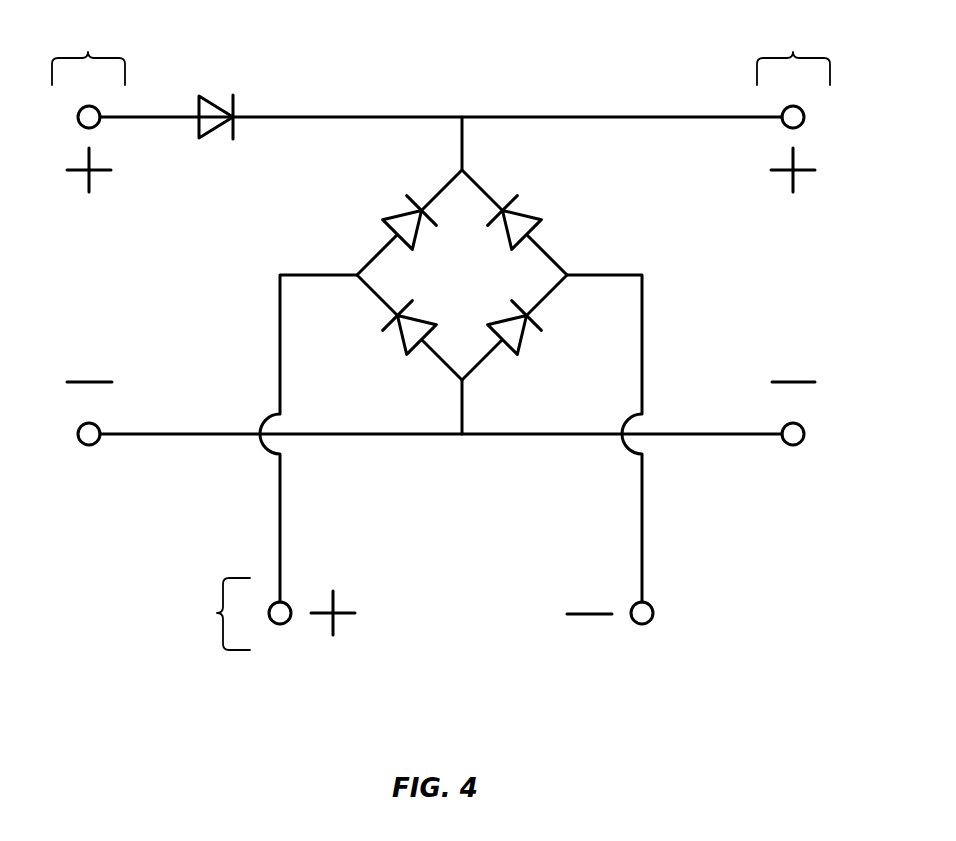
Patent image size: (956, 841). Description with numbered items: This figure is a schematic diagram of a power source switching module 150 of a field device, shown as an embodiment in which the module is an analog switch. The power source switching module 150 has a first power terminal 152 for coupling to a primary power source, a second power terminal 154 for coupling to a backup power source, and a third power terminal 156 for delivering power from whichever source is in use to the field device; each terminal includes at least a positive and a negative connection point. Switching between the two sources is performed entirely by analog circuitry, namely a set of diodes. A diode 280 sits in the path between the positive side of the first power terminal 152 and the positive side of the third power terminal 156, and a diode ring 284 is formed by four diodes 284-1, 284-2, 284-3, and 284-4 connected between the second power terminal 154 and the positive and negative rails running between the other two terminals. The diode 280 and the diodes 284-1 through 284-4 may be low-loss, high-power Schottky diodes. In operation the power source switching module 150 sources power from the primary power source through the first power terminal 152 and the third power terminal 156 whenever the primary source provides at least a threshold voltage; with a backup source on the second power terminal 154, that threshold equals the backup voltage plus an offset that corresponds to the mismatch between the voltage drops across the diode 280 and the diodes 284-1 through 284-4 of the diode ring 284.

The power source switching module 150 is at (519, 32).
The first power terminal 152 is at (88, 55).
The second power terminal 154 is at (217, 613).
The third power terminal 156 is at (793, 55).
The diode 280 is at (214, 100).
The diode ring 284 is at (592, 231).
The diode 284-1 is at (390, 328).
The diode 284-2 is at (401, 212).
The diode 284-3 is at (526, 328).
The diode 284-4 is at (522, 210).